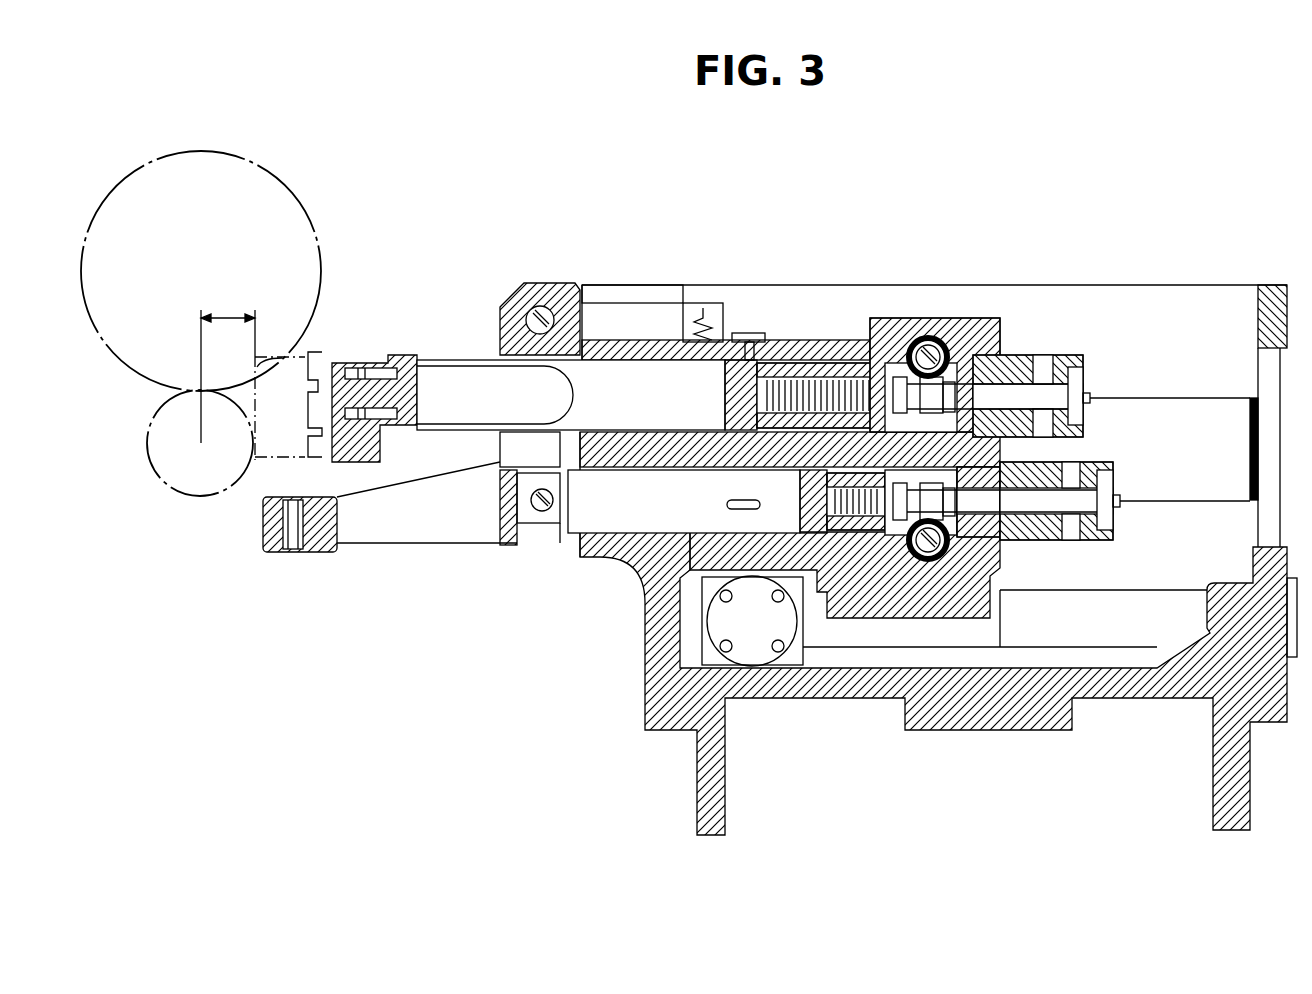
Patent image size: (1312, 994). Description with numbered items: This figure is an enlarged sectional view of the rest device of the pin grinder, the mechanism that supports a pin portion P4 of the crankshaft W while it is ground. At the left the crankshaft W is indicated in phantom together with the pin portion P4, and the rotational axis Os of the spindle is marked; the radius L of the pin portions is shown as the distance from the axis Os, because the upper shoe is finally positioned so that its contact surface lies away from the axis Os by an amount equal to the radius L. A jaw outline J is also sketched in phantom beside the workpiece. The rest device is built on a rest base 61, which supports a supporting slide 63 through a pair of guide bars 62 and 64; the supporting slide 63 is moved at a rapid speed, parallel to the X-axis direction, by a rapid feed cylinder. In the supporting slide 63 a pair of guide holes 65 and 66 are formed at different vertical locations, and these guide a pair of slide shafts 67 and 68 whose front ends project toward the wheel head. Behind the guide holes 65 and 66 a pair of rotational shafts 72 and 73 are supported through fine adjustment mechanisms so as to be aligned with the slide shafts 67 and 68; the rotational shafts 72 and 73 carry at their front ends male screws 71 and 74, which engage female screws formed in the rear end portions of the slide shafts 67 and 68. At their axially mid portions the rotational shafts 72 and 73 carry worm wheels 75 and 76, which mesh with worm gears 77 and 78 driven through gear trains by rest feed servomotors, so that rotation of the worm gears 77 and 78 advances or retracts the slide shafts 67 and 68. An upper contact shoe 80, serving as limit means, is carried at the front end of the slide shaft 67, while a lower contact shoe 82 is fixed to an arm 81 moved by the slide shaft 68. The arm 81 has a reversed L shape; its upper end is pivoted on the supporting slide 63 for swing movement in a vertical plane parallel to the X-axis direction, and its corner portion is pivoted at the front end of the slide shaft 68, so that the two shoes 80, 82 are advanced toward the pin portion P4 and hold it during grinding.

The crankshaft W is at (262, 213).
The chuck jaw J is at (307, 263).
The radius of the pin portions L is at (228, 315).
The rotational axis of the spindle Os is at (203, 447).
The pin portion P4 is at (197, 483).
The rest base 61 is at (1185, 683).
The guide bar 62 is at (1123, 630).
The supporting slide 63 is at (885, 595).
The guide bar 64 is at (1182, 427).
The guide hole 65 is at (897, 370).
The guide hole 66 is at (897, 477).
The slide shaft 67 is at (660, 377).
The slide shaft 68 is at (625, 483).
The male screw 71 is at (855, 522).
The rotational shaft 72 is at (1005, 322).
The rotational shaft 73 is at (950, 512).
The male screw 74 is at (775, 378).
The worm wheel 75 is at (940, 392).
The worm wheel 76 is at (928, 507).
The worm gear 77 is at (927, 338).
The worm gear 78 is at (935, 560).
The upper contact shoe 80 is at (368, 372).
The arm 81 is at (442, 532).
The lower contact shoe 82 is at (290, 553).